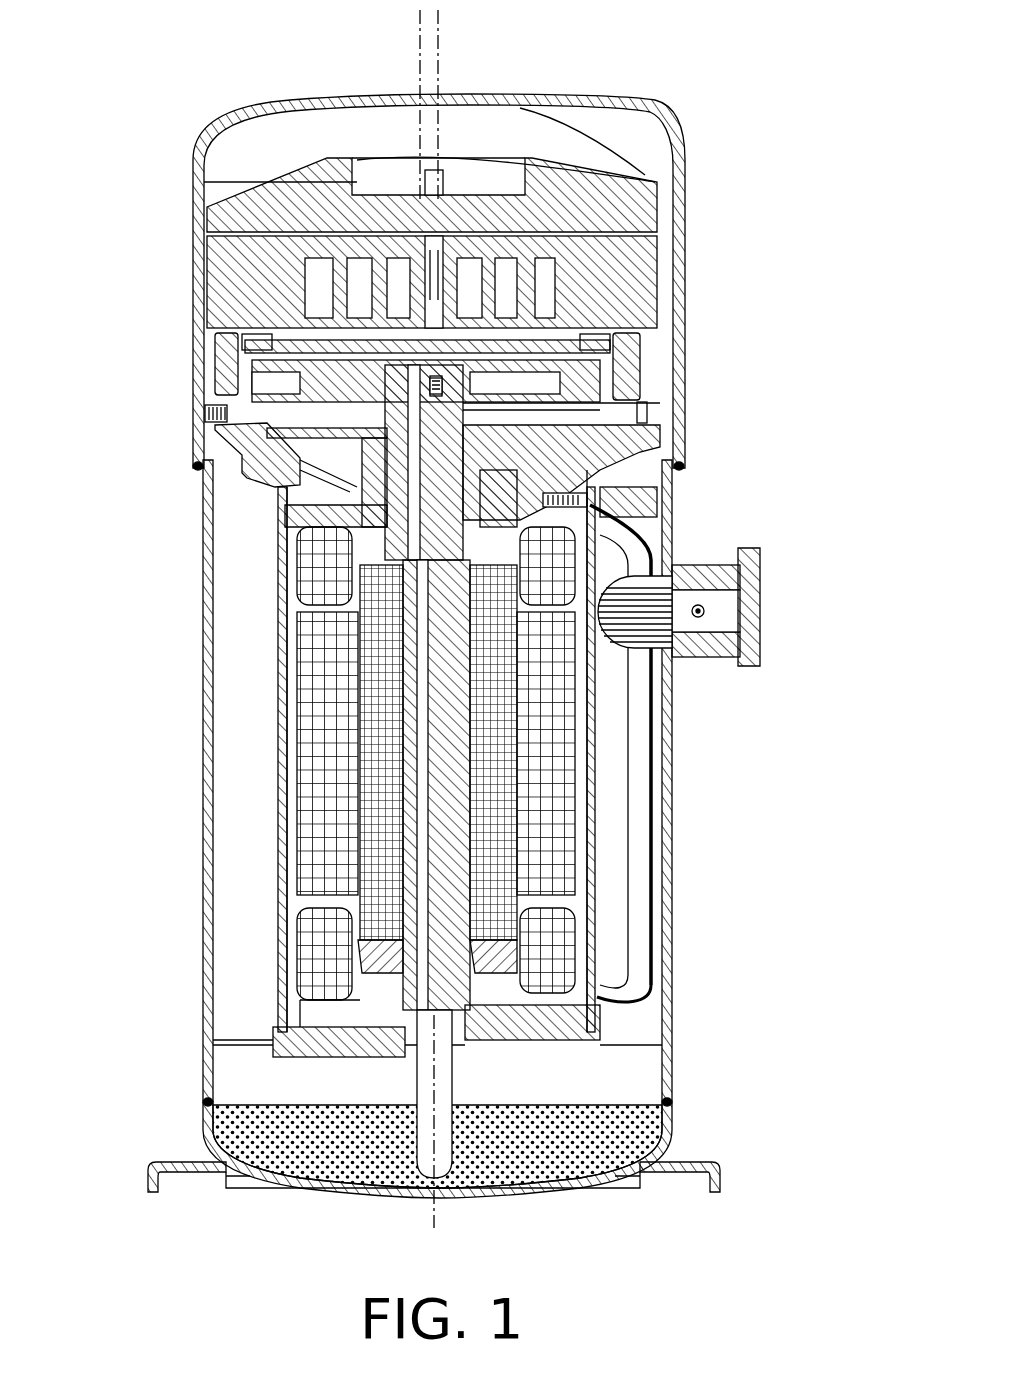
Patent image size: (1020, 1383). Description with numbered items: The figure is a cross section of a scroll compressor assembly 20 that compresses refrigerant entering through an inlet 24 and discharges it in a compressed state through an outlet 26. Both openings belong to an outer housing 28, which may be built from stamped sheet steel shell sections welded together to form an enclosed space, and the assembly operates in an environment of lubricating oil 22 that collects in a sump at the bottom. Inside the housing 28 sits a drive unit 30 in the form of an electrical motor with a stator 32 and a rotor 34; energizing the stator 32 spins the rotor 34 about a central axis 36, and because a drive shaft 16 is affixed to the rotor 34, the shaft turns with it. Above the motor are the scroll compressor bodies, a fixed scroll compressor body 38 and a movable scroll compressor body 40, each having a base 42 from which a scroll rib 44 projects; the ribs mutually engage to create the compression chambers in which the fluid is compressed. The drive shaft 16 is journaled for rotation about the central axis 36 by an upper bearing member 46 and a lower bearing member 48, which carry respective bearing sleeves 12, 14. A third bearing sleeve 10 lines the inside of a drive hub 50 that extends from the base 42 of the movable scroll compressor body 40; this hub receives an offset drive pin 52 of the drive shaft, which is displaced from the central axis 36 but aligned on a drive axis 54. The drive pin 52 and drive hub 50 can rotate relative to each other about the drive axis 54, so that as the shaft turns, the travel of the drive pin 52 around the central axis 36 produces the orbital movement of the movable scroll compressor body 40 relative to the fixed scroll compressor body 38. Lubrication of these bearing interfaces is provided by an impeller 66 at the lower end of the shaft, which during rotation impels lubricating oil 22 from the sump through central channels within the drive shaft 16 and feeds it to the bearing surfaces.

The bearing sleeve 10 is at (600, 418).
The bearing sleeve 12 is at (605, 508).
The bearing sleeve 14 is at (575, 998).
The drive shaft 16 is at (470, 742).
The scroll compressor assembly 20 is at (795, 192).
The lubricating oil 22 is at (560, 1140).
The inlet 24 is at (745, 605).
The outlet 26 is at (687, 168).
The outer housing 28 is at (203, 752).
The drive unit 30 is at (290, 852).
The stator 32 is at (313, 748).
The rotor 34 is at (368, 690).
The central axis 36 is at (440, 48).
The fixed scroll compressor body 38 is at (647, 257).
The movable scroll compressor body 40 is at (630, 360).
The base 42 is at (317, 243).
The scroll rib 44 is at (205, 243).
The upper bearing member 46 is at (262, 480).
The lower bearing member 48 is at (340, 1032).
The drive hub 50 is at (600, 450).
The offset drive pin 52 is at (505, 353).
The drive axis 54 is at (420, 43).
The impeller 66 is at (425, 1090).